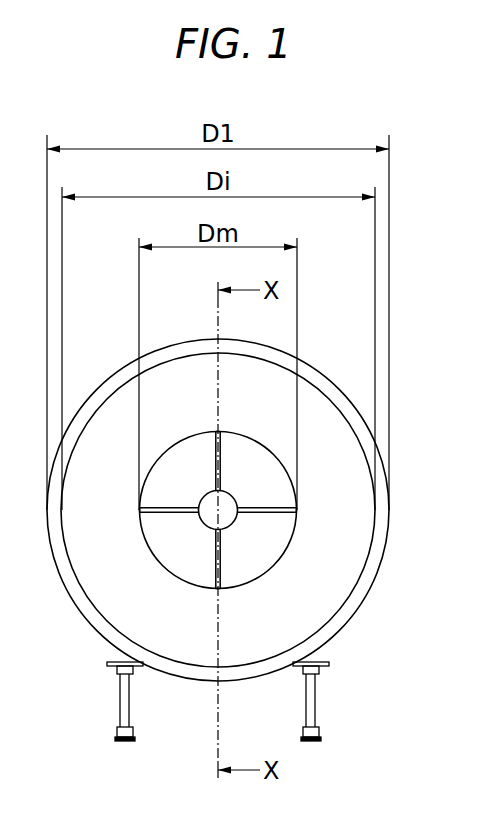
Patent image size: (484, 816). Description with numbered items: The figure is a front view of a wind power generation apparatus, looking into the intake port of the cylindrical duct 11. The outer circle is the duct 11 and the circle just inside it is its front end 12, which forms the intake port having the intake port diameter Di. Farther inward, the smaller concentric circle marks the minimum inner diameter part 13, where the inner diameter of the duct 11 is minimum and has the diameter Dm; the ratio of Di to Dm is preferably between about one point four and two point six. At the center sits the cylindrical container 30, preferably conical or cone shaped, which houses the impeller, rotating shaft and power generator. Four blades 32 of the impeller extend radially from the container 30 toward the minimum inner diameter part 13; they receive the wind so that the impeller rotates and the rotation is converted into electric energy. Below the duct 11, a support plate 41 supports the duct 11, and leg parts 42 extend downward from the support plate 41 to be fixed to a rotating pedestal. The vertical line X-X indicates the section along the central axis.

The duct 11 is at (317, 612).
The front end 12 is at (177, 668).
The minimum inner diameter part 13 is at (287, 543).
The cylindrical container 30 is at (233, 523).
The blades 32 is at (282, 517).
The support plate 41 is at (107, 662).
The leg parts 42 is at (316, 710).